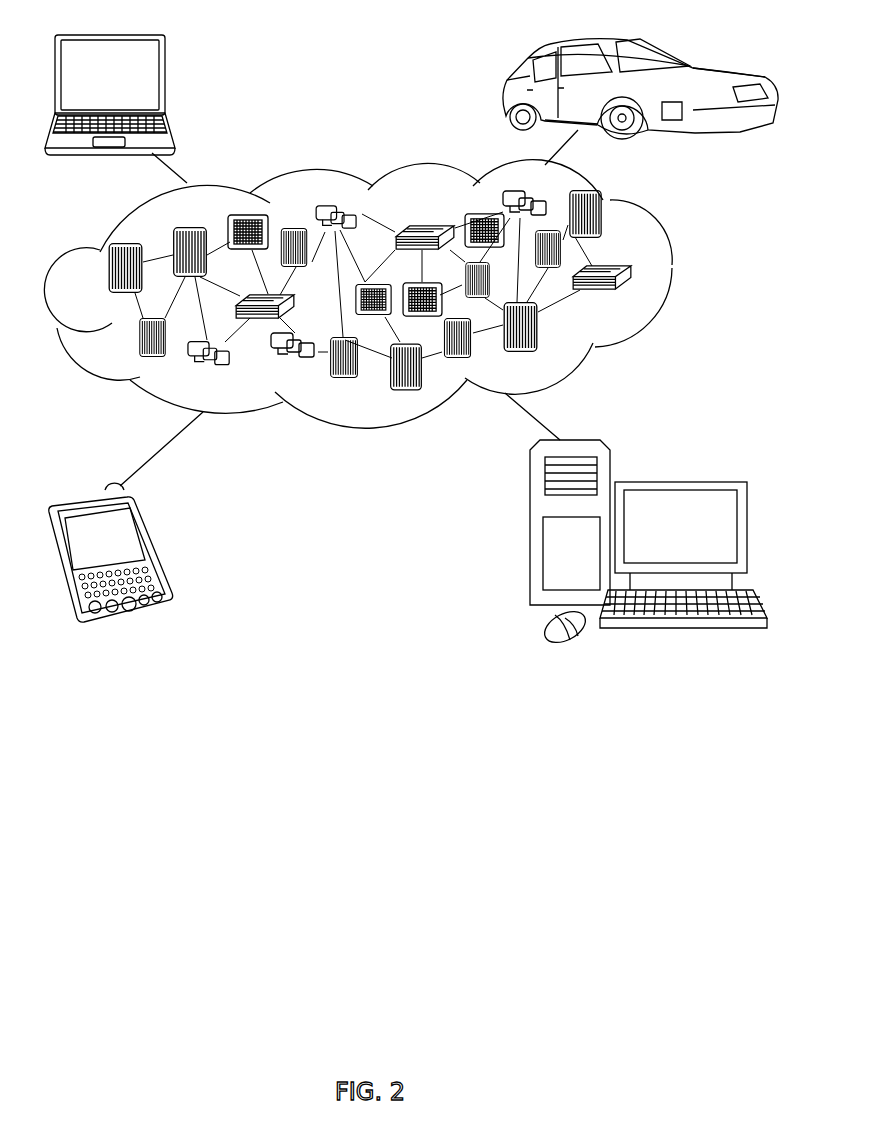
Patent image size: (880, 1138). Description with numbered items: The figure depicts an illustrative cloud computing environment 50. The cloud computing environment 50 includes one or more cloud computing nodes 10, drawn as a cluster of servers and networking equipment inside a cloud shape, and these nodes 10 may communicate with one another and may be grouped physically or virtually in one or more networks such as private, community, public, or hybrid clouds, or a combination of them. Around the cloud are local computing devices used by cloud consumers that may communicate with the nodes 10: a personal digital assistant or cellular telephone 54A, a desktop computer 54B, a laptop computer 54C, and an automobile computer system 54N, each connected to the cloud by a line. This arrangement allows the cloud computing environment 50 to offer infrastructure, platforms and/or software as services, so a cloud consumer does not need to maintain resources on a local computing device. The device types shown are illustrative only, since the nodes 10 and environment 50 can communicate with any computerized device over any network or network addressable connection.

The cloud computing environment 50 is at (676, 272).
The cloud computing nodes 10 is at (645, 300).
The personal digital assistant or cellular telephone 54A is at (158, 549).
The desktop computer 54B is at (679, 480).
The laptop computer 54C is at (167, 82).
The automobile computer system 54N is at (505, 93).